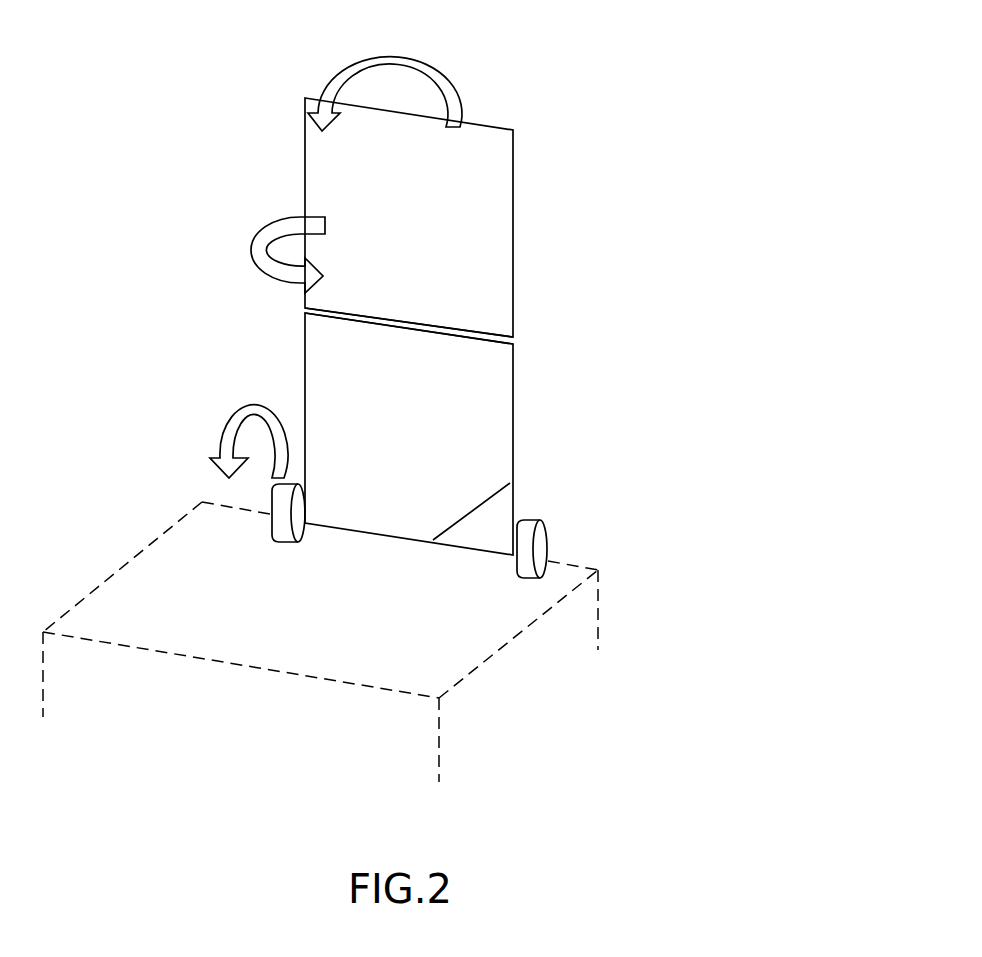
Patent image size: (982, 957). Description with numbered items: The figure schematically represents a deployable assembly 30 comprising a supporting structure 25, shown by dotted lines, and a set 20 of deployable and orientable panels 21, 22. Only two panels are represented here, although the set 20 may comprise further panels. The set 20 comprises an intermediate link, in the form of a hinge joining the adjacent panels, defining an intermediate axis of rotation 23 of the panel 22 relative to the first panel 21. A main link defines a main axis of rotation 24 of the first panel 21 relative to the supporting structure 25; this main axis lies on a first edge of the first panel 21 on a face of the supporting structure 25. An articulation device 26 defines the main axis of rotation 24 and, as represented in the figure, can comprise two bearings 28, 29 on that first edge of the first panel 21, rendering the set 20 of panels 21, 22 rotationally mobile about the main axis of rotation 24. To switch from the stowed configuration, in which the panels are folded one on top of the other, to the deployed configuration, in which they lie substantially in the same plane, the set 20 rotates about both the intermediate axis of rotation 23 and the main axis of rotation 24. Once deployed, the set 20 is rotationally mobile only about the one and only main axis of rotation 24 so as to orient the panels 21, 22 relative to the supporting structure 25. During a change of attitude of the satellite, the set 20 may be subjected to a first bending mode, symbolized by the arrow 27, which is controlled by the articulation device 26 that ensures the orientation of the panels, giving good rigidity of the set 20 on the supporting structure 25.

The set of deployable and orientable panels 20 is at (399, 304).
The first panel 21 is at (514, 455).
The panel 22 is at (514, 248).
The intermediate axis of rotation 23 is at (514, 340).
The main axis of rotation 24 is at (510, 483).
The supporting structure 25 is at (533, 668).
The articulation device 26 is at (557, 548).
The arrow 27 is at (346, 70).
The bearing 28 is at (547, 537).
The bearing 29 is at (272, 505).
The deployable assembly 30 is at (150, 61).